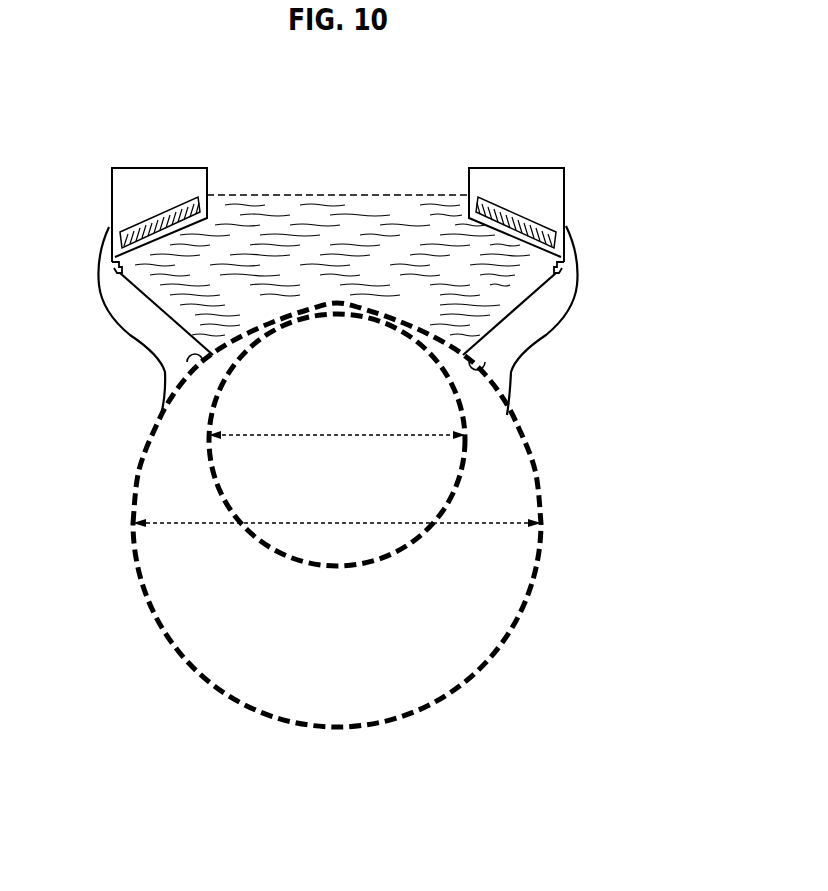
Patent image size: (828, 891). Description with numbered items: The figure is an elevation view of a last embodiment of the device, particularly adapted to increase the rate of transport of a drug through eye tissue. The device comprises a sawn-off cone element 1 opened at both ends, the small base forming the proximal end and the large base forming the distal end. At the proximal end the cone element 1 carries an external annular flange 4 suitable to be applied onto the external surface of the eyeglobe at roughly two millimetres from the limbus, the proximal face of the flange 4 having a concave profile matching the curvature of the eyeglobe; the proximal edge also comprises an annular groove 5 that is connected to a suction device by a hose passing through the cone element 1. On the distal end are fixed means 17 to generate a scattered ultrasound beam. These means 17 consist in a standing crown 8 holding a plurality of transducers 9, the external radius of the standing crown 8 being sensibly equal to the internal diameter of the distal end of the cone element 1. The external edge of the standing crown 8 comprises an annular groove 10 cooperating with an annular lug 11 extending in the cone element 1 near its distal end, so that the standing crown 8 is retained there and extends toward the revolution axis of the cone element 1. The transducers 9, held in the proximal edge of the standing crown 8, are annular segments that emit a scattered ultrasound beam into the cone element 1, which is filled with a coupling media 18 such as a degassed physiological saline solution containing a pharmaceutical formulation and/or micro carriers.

The sawn-off cone element 1 is at (603, 313).
The external annular flange 4 is at (510, 390).
The annular groove 5 is at (485, 358).
The standing crown 8 is at (138, 160).
The transducers 9 is at (130, 223).
The annular groove 10 is at (115, 262).
The annular lug 11 is at (563, 264).
The means to generate scattered ultrasound beam 17 is at (592, 203).
The coupling media 18 is at (336, 225).